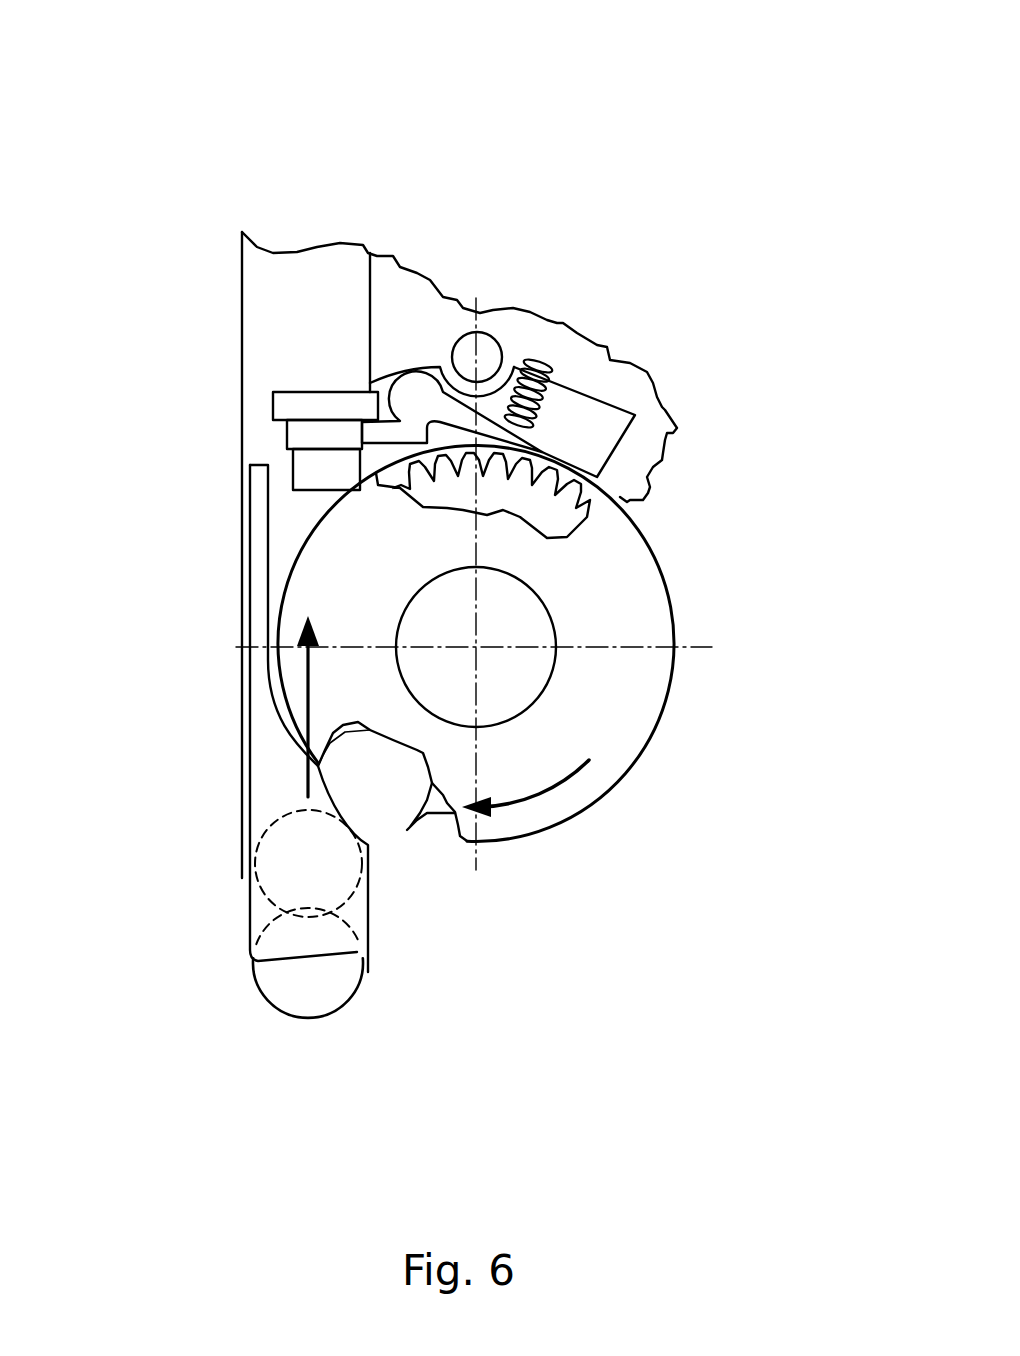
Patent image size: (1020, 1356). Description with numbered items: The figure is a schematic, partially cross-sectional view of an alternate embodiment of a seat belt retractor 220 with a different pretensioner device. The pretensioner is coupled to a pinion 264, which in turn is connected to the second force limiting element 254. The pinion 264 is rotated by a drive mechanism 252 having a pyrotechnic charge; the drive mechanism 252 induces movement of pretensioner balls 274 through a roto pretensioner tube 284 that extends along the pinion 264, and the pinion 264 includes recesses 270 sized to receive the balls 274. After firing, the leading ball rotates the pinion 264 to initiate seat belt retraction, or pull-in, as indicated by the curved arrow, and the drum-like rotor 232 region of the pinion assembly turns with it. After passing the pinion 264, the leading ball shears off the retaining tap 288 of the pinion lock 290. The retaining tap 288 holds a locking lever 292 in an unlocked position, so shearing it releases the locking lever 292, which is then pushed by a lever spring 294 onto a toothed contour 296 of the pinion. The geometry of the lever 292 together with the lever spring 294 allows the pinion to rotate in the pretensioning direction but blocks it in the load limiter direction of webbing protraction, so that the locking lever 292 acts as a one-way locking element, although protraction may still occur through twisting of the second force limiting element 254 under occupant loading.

The retractor 220 is at (662, 90).
The rotor drum 232 is at (614, 868).
The drive mechanism 252 is at (224, 1022).
The second force limiting element 254 is at (497, 625).
The pinion 264 is at (640, 694).
The recesses 270 is at (427, 820).
The pretensioner balls 274 is at (263, 832).
The roto pretensioner tube 284 is at (247, 922).
The retaining tap 288 is at (273, 393).
The pinion lock 290 is at (590, 426).
The locking lever 292 is at (415, 372).
The lever spring 294 is at (545, 392).
The toothed contour 296 is at (567, 482).